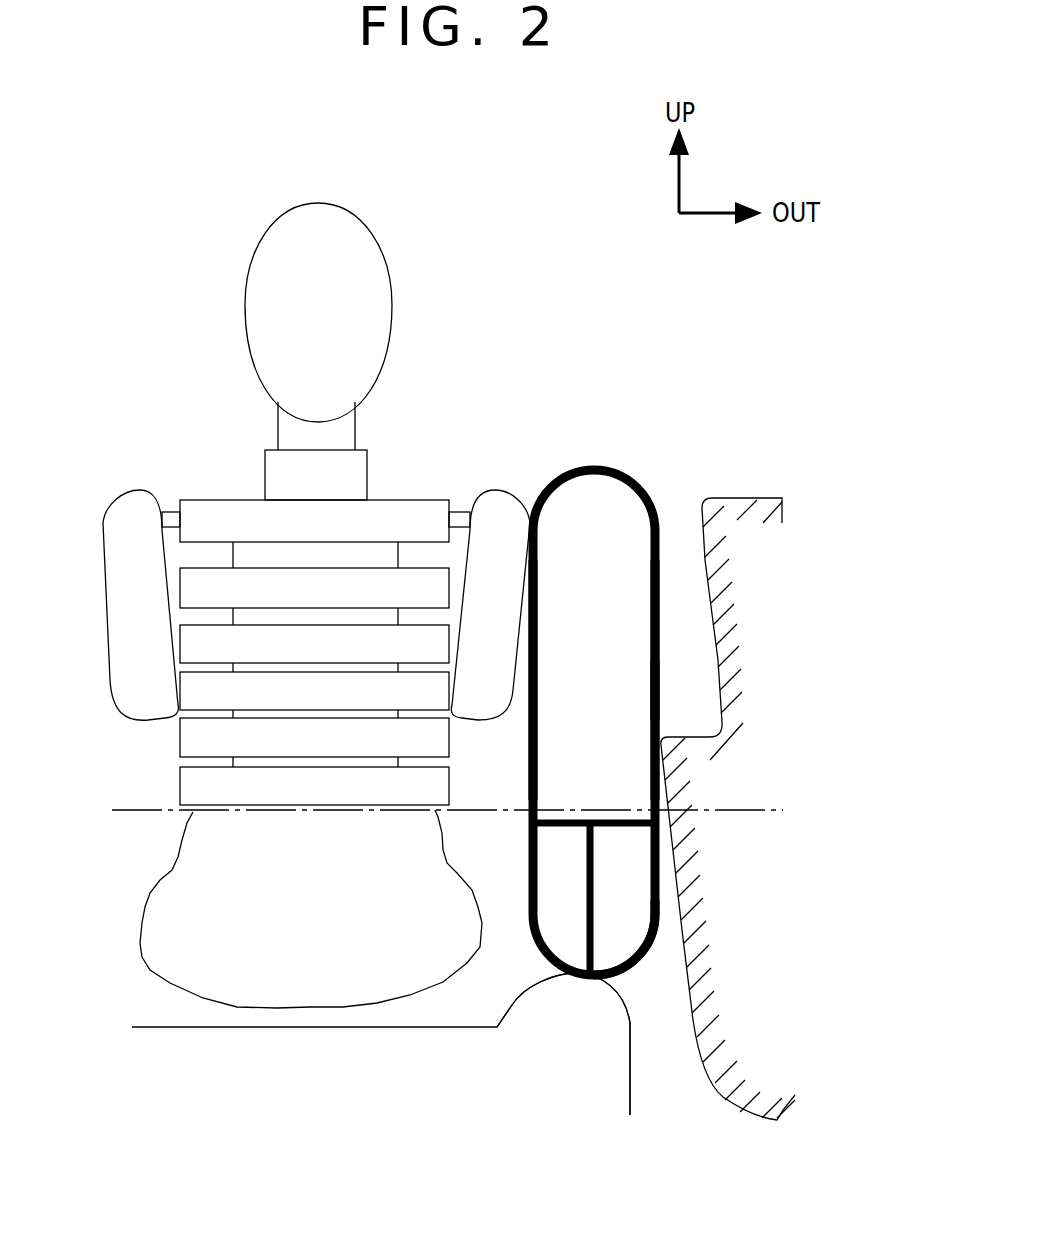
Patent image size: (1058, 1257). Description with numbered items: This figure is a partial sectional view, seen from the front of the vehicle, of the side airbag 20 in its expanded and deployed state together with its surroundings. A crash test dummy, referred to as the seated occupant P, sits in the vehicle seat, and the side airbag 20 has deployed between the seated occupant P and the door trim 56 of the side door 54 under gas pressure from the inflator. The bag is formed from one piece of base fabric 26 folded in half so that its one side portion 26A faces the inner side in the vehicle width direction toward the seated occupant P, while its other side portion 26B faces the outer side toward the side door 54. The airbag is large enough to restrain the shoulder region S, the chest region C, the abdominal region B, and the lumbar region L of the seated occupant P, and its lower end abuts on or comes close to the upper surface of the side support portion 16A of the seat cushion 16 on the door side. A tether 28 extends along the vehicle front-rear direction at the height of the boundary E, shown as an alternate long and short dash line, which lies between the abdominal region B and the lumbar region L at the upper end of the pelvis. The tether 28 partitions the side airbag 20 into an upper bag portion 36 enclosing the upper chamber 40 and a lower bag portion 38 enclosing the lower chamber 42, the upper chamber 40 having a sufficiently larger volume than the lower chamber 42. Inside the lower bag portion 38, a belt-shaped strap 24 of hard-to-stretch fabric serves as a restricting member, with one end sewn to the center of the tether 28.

The seated occupant P is at (282, 211).
The shoulder region S is at (507, 495).
The chest region C is at (200, 643).
The abdominal region B is at (192, 782).
The lumbar region L is at (147, 900).
The boundary E is at (740, 817).
The seat cushion 16 is at (310, 1027).
The side support portion 16A is at (473, 982).
The side airbag 20 is at (633, 478).
The strap 24 is at (593, 882).
The base fabric 26 is at (658, 643).
The one side portion 26A is at (528, 738).
The other side portion 26B is at (658, 690).
The tether 28 is at (630, 828).
The upper bag portion 36 is at (657, 592).
The lower bag portion 38 is at (653, 927).
The upper chamber 40 is at (615, 677).
The lower chamber 42 is at (552, 863).
The side door 54 is at (729, 809).
The door trim 56 is at (742, 497).